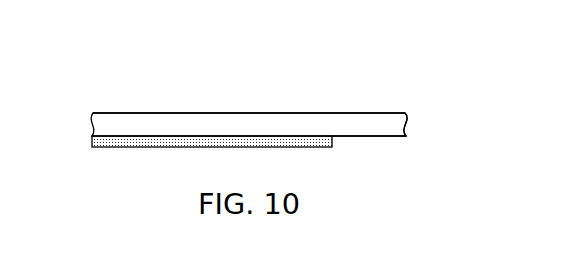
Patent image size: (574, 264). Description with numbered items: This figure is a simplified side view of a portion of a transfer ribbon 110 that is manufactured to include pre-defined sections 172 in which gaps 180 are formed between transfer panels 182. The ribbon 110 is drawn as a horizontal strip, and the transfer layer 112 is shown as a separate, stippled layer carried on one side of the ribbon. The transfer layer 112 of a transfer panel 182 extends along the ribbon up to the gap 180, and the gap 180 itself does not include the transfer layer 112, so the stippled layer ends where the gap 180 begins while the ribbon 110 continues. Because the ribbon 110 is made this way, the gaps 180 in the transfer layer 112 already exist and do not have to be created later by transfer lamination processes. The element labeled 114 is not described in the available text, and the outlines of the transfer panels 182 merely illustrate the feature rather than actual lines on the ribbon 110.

The transfer ribbon 110 is at (110, 56).
The transfer layer 112 is at (110, 148).
The top layer 114 is at (273, 118).
The pre-defined section 172 is at (373, 130).
The gap 180 is at (375, 118).
The transfer panel 182 is at (190, 118).